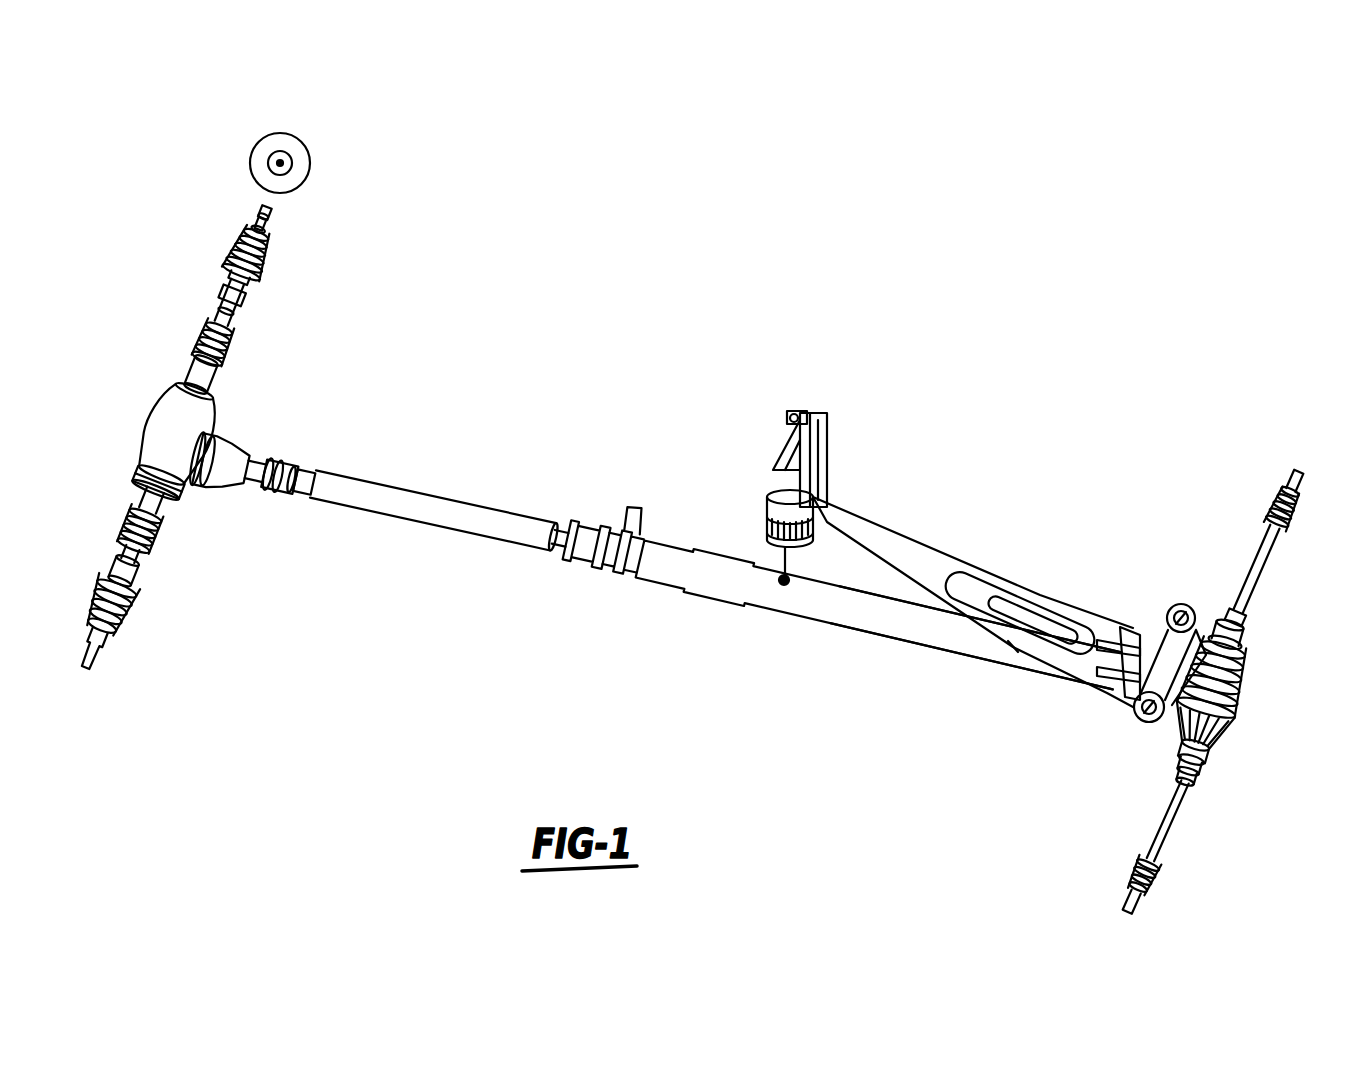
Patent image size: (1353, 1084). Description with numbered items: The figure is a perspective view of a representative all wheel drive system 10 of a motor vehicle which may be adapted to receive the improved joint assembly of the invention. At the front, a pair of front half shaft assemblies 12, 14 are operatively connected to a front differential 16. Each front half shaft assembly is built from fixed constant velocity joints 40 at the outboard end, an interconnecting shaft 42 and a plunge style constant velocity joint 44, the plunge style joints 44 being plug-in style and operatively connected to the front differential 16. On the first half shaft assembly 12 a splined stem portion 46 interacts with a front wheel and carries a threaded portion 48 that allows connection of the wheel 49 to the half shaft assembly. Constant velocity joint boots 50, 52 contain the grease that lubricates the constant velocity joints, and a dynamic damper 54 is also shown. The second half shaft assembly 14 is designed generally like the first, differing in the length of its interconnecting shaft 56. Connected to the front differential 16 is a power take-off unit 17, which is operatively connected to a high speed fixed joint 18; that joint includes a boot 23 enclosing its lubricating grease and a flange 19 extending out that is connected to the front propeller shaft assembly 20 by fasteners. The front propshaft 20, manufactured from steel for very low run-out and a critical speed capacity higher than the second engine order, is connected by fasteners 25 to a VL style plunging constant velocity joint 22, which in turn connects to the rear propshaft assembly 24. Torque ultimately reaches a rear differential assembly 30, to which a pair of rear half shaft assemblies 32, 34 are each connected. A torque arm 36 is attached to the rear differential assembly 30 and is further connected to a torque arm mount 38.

The all wheel drive system 10 is at (683, 530).
The front half shaft assembly 12 is at (224, 305).
The front half shaft assembly 14 is at (124, 555).
The front differential 16 is at (150, 440).
The power take-off unit 17 is at (220, 437).
The high speed fixed joint 18 is at (292, 456).
The flange 19 is at (302, 470).
The front propeller shaft assembly 20 is at (443, 510).
The VL style plunging constant velocity joint 22 is at (587, 523).
The boot 23 is at (292, 497).
The rear propshaft assembly 24 is at (862, 615).
The fasteners 25 is at (597, 567).
The rear differential assembly 30 is at (1227, 627).
The rear half shaft assembly 32 is at (1163, 827).
The rear half shaft assembly 34 is at (1262, 560).
The torque arm 36 is at (1090, 617).
The torque arm mount 38 is at (840, 423).
The fixed constant velocity joint 40 is at (258, 216).
The interconnecting shaft 42 is at (243, 291).
The plunge style constant velocity joint 44 is at (224, 370).
The stem portion 46 is at (270, 222).
The threaded portion 48 is at (270, 210).
The wheel 49 is at (310, 163).
The constant velocity joint boot 50 is at (233, 243).
The constant velocity joint boot 52 is at (200, 323).
The dynamic damper 54 is at (233, 263).
The interconnecting shaft 56 is at (132, 590).